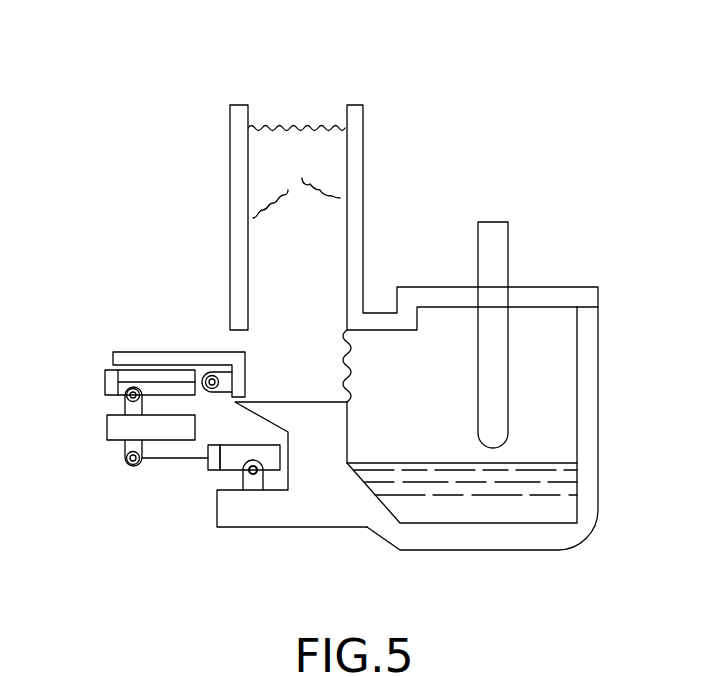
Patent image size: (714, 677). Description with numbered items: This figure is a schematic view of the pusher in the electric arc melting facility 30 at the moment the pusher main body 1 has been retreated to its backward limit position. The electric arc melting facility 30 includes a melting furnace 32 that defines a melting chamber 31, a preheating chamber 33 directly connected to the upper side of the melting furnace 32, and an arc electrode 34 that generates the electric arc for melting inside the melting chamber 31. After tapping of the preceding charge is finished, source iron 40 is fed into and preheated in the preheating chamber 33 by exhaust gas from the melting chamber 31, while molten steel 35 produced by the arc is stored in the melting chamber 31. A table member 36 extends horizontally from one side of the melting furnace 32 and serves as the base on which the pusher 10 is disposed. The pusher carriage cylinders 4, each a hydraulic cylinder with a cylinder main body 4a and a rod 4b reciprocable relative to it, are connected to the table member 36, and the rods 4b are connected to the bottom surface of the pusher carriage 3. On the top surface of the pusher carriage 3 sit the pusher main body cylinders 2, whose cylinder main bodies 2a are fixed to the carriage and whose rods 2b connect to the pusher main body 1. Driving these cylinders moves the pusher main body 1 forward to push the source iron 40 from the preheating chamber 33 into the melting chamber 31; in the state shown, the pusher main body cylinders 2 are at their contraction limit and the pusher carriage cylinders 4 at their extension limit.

The pusher 10 is at (103, 292).
The pusher main body 1 is at (187, 357).
The pusher main body cylinder 2 is at (92, 380).
The cylinder main body 2a is at (137, 370).
The rod 2b is at (203, 372).
The pusher carriage 3 is at (117, 427).
The pusher carriage cylinder 4 is at (213, 475).
The cylinder main body 4a is at (260, 445).
The rod 4b is at (167, 463).
The electric arc melting facility 30 is at (525, 120).
The melting chamber 31 is at (547, 377).
The melting furnace 32 is at (598, 318).
The preheating chamber 33 is at (300, 108).
The arc electrode 34 is at (508, 252).
The molten steel 35 is at (545, 492).
The table member 36 is at (252, 515).
The source iron 40 is at (322, 227).